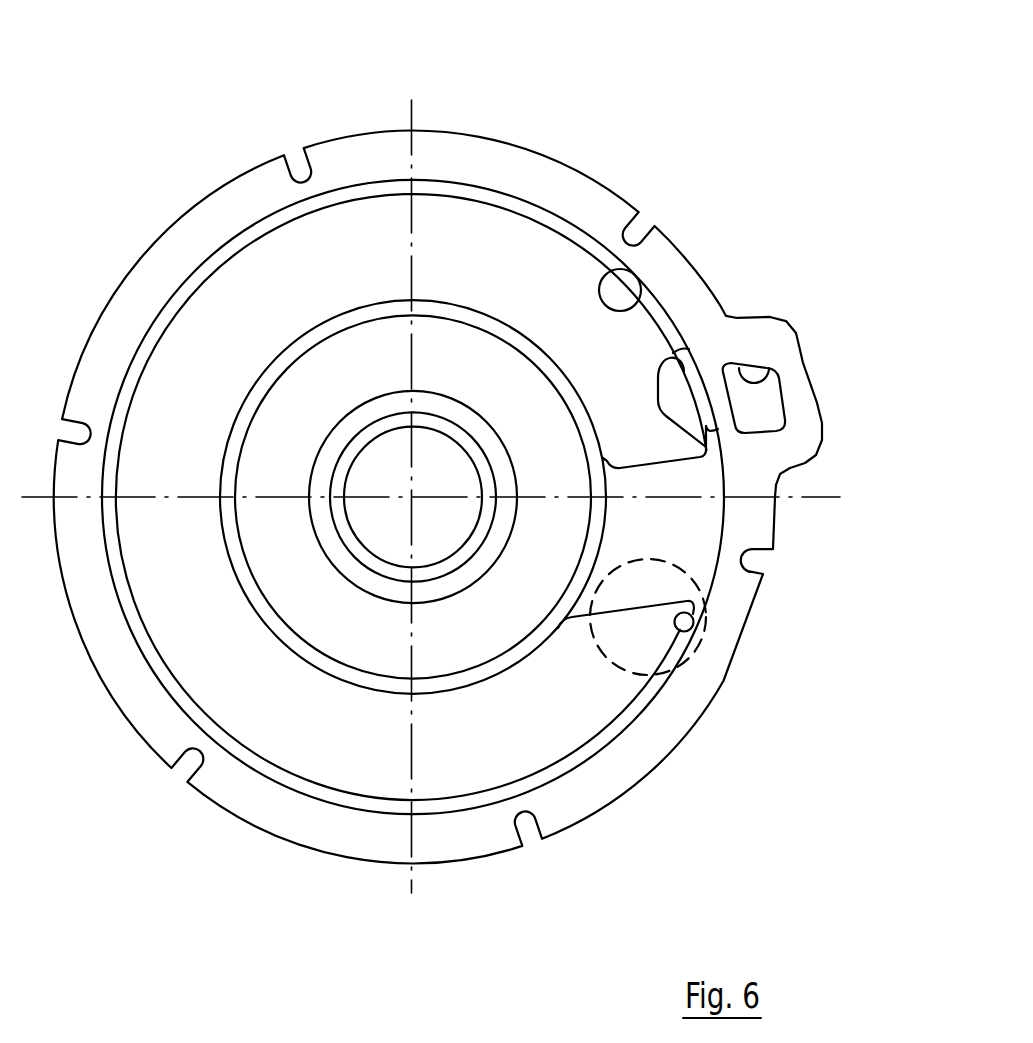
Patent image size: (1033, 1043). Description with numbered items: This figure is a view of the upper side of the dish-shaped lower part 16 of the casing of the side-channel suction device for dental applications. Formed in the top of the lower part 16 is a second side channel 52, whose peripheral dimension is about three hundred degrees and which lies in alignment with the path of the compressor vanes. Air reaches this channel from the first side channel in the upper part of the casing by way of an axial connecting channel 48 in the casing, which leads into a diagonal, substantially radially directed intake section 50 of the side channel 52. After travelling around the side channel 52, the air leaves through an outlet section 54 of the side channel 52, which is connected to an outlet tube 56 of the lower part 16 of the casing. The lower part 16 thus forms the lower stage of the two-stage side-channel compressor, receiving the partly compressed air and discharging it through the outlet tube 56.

The lower part 16 is at (574, 150).
The axial connecting channel 48 is at (770, 368).
The intake section 50 is at (688, 383).
The second side channel 52 is at (632, 270).
The outlet section 54 is at (705, 620).
The outlet tube 56 is at (624, 680).